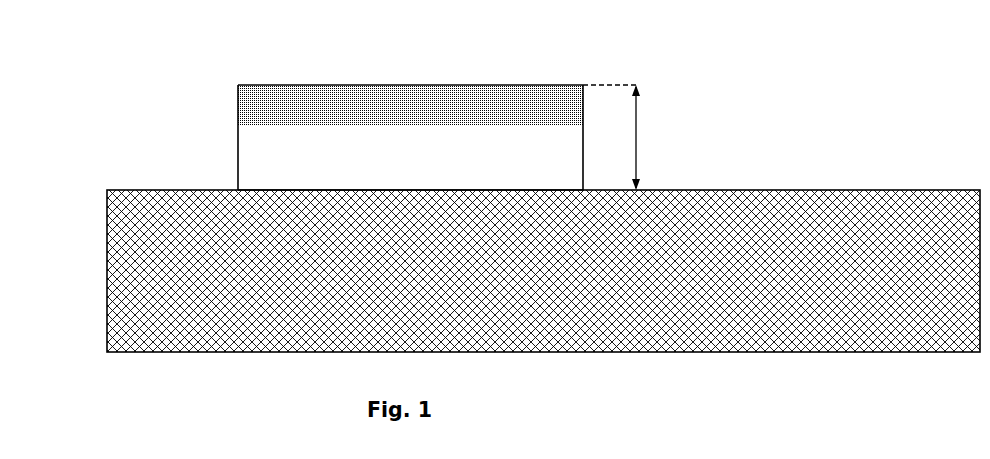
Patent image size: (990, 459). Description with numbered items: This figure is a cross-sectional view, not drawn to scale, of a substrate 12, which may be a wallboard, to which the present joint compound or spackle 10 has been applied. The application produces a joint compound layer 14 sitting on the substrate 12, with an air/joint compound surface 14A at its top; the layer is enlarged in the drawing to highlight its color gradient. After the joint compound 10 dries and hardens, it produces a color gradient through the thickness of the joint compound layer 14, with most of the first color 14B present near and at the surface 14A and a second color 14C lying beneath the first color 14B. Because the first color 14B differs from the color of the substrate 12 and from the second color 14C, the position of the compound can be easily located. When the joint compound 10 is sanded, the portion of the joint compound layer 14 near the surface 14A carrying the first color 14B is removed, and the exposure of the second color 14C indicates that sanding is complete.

The joint compound 10 is at (502, 194).
The substrate 12 is at (99, 302).
The joint compound layer 14 is at (440, 113).
The air/joint compound surface 14A is at (370, 85).
The first color 14B is at (238, 101).
The second color 14C is at (246, 166).